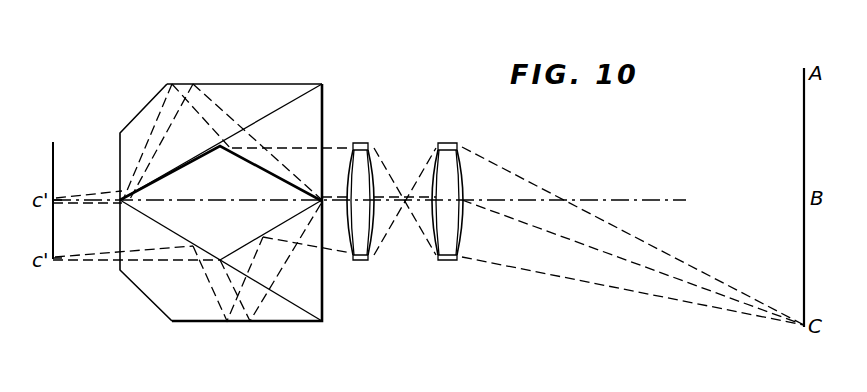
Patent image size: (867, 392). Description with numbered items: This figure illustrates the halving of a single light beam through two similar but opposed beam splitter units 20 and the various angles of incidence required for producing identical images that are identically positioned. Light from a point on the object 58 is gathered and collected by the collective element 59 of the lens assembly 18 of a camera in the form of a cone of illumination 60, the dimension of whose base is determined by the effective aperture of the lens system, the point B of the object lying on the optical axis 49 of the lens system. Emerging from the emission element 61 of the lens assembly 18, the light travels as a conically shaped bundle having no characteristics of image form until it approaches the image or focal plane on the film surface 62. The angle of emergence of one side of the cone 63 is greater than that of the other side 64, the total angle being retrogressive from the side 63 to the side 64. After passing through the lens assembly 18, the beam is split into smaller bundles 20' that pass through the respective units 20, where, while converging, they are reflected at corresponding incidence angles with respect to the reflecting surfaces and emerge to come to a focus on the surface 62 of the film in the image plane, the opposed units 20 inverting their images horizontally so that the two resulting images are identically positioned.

The beam splitter unit 20 is at (237, 200).
The smaller bundle 20' is at (187, 202).
The film surface 62 is at (53, 227).
The side of cone 64 is at (303, 147).
The side of cone 63 is at (310, 248).
The emission element 61 is at (362, 260).
The collective element 59 is at (452, 260).
The lens assembly 18 is at (413, 252).
The optical axis 49 is at (369, 185).
The object 58 is at (803, 133).
The cone of illumination 60 is at (718, 273).